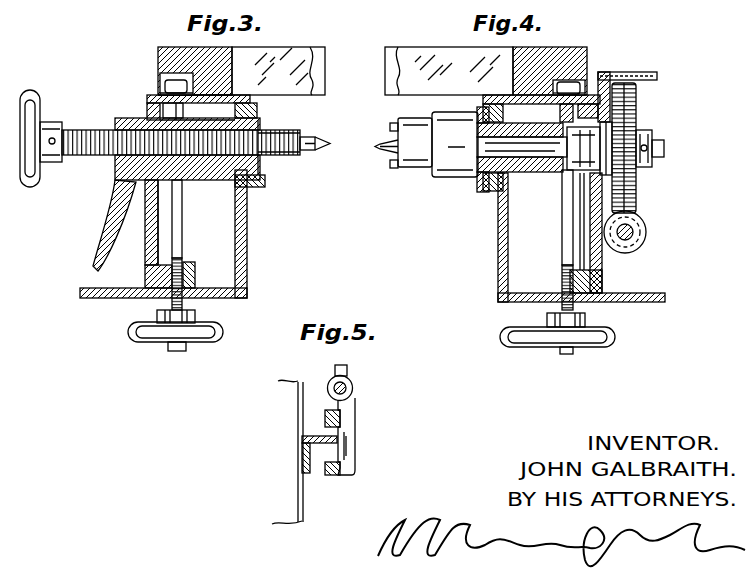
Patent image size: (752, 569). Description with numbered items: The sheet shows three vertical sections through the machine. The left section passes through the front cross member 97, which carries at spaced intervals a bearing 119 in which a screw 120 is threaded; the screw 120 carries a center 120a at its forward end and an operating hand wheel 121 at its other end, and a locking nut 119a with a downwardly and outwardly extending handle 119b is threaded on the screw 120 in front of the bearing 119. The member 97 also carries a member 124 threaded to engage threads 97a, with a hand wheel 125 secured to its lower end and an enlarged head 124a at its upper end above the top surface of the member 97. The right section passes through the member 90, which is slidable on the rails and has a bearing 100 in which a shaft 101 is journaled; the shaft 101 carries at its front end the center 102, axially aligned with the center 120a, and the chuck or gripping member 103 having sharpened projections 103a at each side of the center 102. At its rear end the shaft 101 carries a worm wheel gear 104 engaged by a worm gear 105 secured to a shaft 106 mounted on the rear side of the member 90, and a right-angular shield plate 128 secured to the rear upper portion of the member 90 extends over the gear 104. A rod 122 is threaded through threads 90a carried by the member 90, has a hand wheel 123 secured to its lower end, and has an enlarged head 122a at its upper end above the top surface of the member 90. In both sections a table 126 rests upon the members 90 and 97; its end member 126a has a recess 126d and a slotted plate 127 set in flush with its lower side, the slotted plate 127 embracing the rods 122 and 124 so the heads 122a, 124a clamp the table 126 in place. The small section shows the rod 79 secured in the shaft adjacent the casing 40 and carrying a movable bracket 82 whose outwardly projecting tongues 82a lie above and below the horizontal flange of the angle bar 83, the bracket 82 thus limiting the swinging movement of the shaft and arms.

In FIG. 3, the operating hand wheel 121 is at (43, 105).
In FIG. 3, the locking nut 119a is at (115, 160).
In FIG. 3, the handle 119b is at (122, 238).
In FIG. 3, the bearing 119 is at (213, 168).
In FIG. 3, the member 124 is at (177, 238).
In FIG. 3, the member 97 is at (248, 218).
In FIG. 3, the threads 97a is at (186, 278).
In FIG. 3, the hand wheel 125 is at (156, 346).
In FIG. 3, the enlarged portion or head 124a is at (157, 94).
In FIG. 3, the recess 126d is at (160, 89).
In FIG. 4, the recess 126d is at (578, 49).
In FIG. 3, the slotted plate 127 is at (213, 84).
In FIG. 4, the slotted plate 127 is at (543, 52).
In FIG. 3, the end member 126a is at (176, 47).
In FIG. 4, the end member 126a is at (585, 80).
In FIG. 3, the table 126 is at (300, 50).
In FIG. 4, the table 126 is at (425, 58).
In FIG. 3, the screw 120 is at (270, 133).
In FIG. 3, the center 120a is at (313, 153).
In FIG. 4, the enlarged portion or head 122a is at (602, 72).
In FIG. 4, the shield plate 128 is at (656, 78).
In FIG. 4, the bearing 100 is at (542, 172).
In FIG. 4, the worm wheel gear 104 is at (636, 192).
In FIG. 4, the shaft 101 is at (651, 157).
In FIG. 4, the worm gear 105 is at (638, 224).
In FIG. 4, the shaft 106 is at (630, 236).
In FIG. 4, the chuck or gripping member 103 is at (420, 173).
In FIG. 4, the center 102 is at (378, 152).
In FIG. 4, the sharpened projection 103a is at (390, 127).
In FIG. 4, the member 90 is at (499, 242).
In FIG. 4, the threads 90a is at (562, 282).
In FIG. 4, the rod 122 is at (563, 230).
In FIG. 4, the hand wheel 123 is at (607, 331).
In FIG. 5, the casing 40 is at (302, 510).
In FIG. 5, the angle bar 83 is at (302, 445).
In FIG. 5, the bracket 82 is at (352, 428).
In FIG. 5, the rod 79 is at (353, 388).
In FIG. 5, the tongue 82a is at (325, 417).